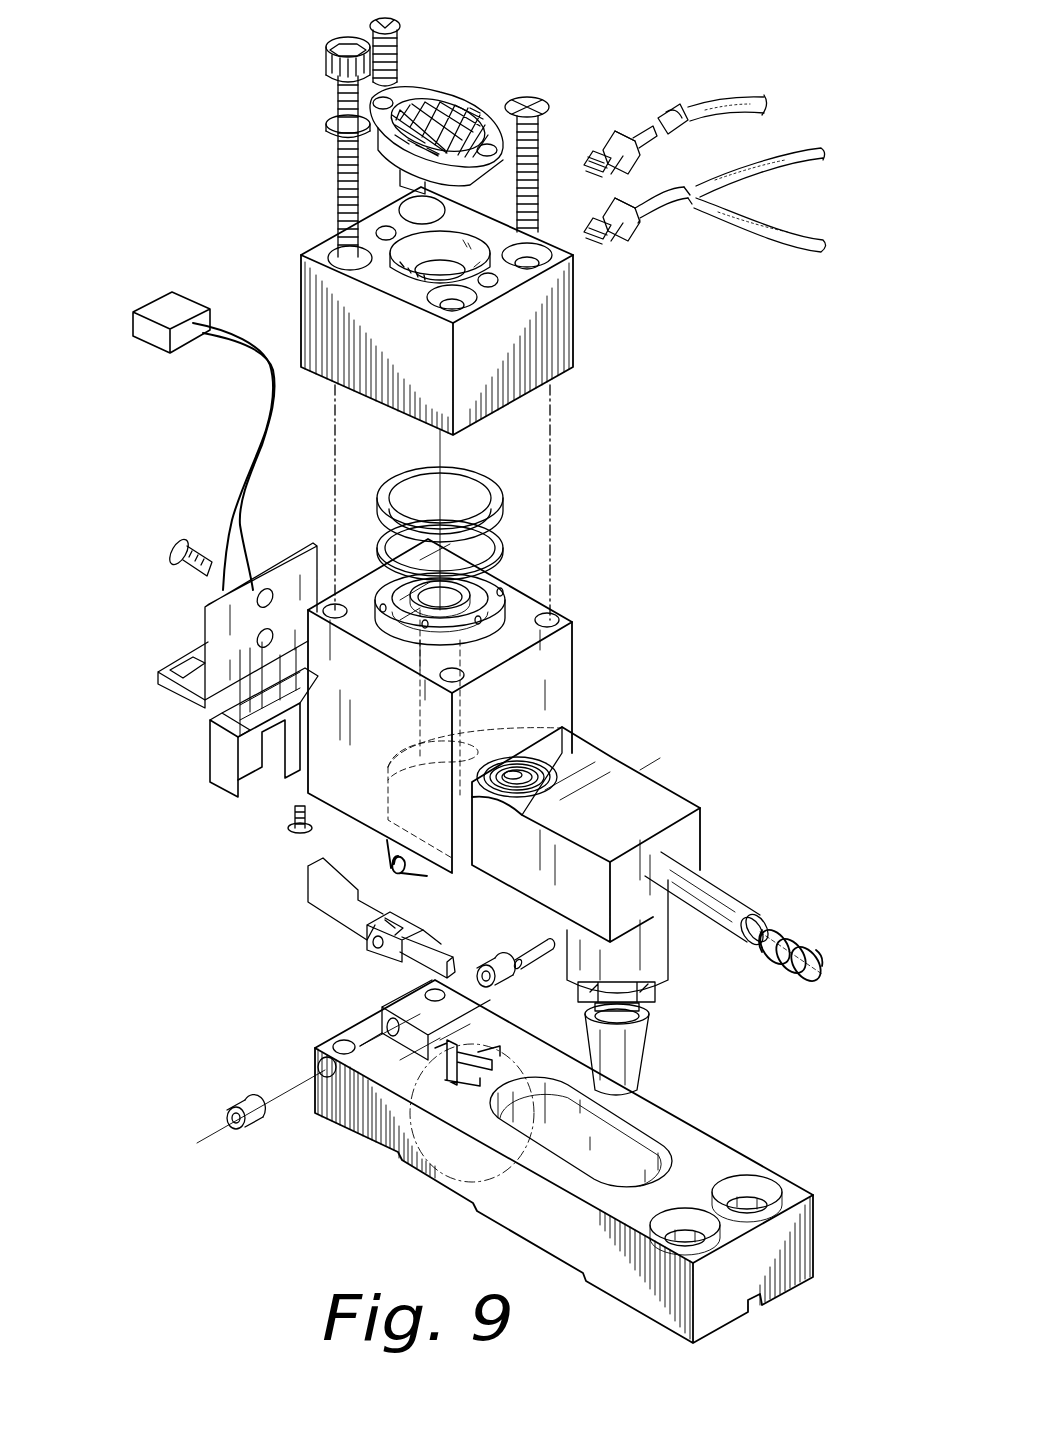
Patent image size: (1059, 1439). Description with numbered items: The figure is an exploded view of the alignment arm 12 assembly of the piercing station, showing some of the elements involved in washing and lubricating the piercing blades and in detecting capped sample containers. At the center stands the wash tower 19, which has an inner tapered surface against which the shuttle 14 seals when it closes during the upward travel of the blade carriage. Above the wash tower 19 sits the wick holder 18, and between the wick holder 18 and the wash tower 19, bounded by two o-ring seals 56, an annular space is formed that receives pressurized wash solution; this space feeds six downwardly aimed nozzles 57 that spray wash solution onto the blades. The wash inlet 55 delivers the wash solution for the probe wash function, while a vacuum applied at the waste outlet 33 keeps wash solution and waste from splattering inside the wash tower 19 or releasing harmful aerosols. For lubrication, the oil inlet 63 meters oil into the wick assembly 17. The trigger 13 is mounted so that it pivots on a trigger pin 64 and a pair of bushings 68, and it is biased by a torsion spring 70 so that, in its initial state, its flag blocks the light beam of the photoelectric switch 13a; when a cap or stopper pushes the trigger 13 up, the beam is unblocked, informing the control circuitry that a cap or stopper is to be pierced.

The alignment arm 12 is at (374, 1143).
The trigger 13 is at (316, 910).
The photoelectric switch 13a is at (210, 758).
The shuttle 14 is at (583, 758).
The wick assembly 17 is at (462, 110).
The wick holder 18 is at (300, 300).
The wash tower 19 is at (574, 650).
The waste outlet 33 is at (644, 1066).
The wash inlet 55 is at (635, 230).
The o-ring seals 56 is at (380, 538).
The nozzles 57 is at (492, 606).
The oil inlet 63 is at (620, 133).
The trigger pin 64 is at (525, 950).
The bushings 68 is at (488, 955).
The torsion spring 70 is at (385, 872).